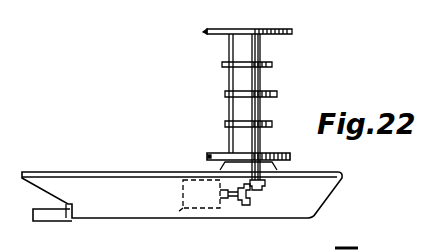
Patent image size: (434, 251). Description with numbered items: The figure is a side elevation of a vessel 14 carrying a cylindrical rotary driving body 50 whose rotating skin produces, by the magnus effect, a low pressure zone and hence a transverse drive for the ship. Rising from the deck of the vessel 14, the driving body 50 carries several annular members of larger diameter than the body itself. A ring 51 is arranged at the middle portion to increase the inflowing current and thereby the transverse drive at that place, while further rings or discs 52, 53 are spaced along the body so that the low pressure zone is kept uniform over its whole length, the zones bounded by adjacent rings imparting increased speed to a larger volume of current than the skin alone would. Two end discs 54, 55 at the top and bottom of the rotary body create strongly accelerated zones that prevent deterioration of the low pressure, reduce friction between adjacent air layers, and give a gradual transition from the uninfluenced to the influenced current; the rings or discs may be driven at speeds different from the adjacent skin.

The vessel 14 is at (116, 214).
The driving body 50 is at (254, 47).
The ring 51 is at (268, 91).
The ring or disc 52 is at (222, 64).
The ring or disc 53 is at (225, 124).
The end disc 54 is at (207, 31).
The end disc 55 is at (210, 153).